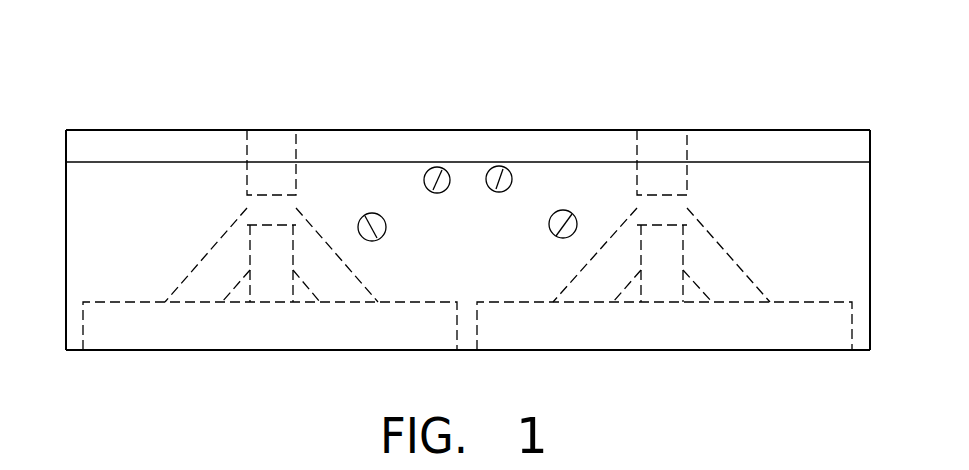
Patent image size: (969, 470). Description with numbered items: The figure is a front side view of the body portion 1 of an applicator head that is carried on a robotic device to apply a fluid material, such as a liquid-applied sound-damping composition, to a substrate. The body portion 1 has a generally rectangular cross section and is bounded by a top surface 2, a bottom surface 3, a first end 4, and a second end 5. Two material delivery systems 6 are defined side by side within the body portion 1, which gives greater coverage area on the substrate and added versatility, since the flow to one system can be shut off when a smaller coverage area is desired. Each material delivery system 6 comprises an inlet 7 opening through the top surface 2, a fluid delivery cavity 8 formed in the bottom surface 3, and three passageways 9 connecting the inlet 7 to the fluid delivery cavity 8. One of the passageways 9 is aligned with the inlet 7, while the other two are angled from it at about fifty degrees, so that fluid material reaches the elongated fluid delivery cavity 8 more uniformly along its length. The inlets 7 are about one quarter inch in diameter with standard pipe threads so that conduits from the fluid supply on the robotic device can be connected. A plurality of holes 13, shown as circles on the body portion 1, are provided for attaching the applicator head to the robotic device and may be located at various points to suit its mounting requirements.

The body portion 1 is at (112, 57).
The top surface 2 is at (767, 130).
The bottom surface 3 is at (738, 351).
The first end 4 is at (870, 247).
The second end 5 is at (66, 182).
The material delivery system 6 is at (247, 328).
The inlet 7 is at (263, 143).
The fluid delivery cavity 8 is at (265, 330).
The passageways 9 is at (223, 268).
The holes 13 is at (499, 192).